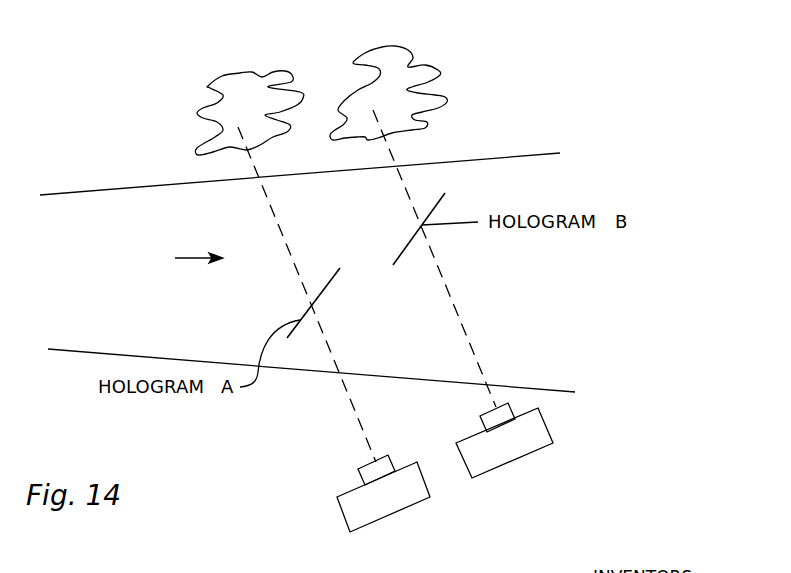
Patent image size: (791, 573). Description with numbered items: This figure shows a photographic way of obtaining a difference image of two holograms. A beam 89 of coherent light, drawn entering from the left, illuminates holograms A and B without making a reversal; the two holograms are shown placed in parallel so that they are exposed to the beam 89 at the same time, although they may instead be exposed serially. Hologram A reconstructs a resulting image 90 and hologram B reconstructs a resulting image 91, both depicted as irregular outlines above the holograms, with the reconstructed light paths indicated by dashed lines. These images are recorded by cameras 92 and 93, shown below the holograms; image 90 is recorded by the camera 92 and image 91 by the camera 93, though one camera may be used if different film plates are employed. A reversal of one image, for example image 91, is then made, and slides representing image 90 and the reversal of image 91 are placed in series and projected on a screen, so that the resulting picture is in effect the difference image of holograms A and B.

The beam of coherent light 89 is at (140, 259).
The image 90 is at (215, 111).
The image 91 is at (420, 102).
The camera 92 is at (360, 508).
The camera 93 is at (535, 435).